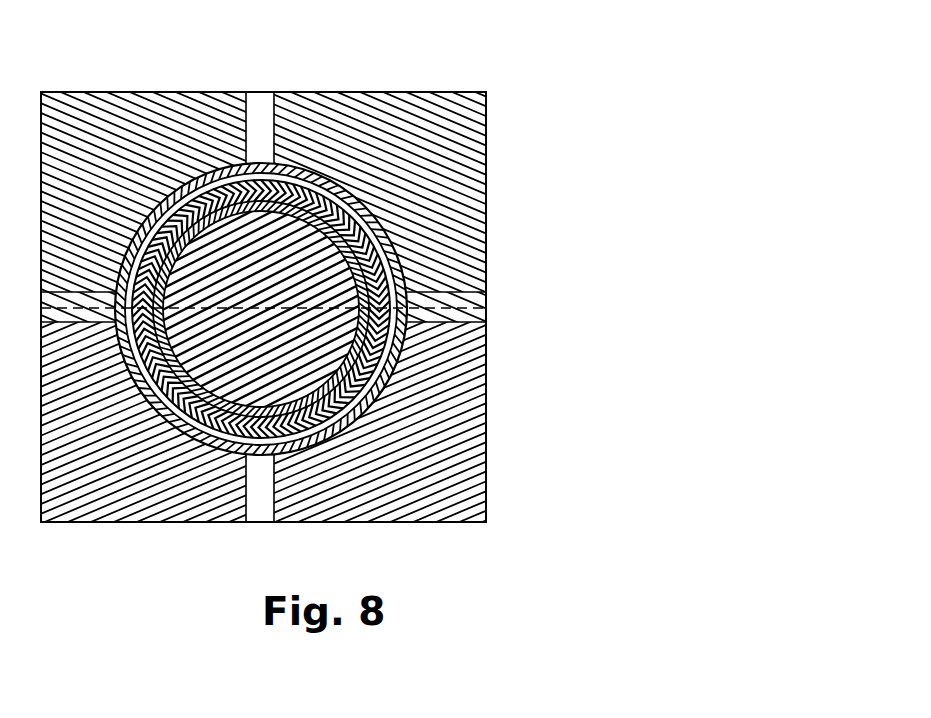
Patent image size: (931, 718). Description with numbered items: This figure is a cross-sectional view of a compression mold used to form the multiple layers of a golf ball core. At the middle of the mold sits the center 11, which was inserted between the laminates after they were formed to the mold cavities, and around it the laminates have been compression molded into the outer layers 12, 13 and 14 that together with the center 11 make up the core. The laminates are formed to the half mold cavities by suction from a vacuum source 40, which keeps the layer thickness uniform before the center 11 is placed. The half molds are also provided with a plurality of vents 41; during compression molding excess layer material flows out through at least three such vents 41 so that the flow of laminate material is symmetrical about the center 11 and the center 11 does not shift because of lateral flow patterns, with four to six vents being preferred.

The center 11 is at (312, 272).
The outer layer 12 is at (385, 338).
The outer layer 13 is at (372, 398).
The outer layer 14 is at (345, 422).
The vacuum source 40 is at (261, 116).
The vent 41 is at (488, 300).